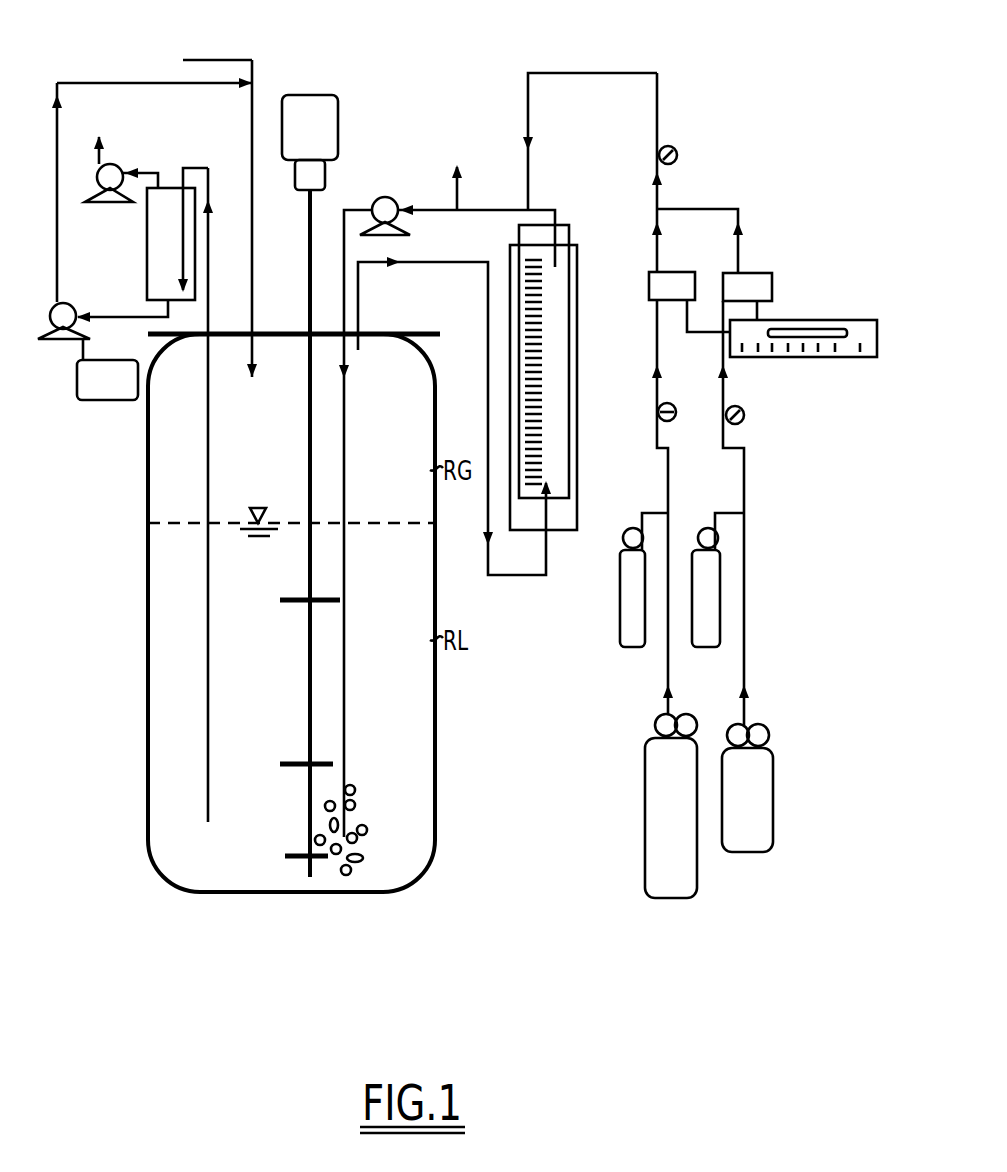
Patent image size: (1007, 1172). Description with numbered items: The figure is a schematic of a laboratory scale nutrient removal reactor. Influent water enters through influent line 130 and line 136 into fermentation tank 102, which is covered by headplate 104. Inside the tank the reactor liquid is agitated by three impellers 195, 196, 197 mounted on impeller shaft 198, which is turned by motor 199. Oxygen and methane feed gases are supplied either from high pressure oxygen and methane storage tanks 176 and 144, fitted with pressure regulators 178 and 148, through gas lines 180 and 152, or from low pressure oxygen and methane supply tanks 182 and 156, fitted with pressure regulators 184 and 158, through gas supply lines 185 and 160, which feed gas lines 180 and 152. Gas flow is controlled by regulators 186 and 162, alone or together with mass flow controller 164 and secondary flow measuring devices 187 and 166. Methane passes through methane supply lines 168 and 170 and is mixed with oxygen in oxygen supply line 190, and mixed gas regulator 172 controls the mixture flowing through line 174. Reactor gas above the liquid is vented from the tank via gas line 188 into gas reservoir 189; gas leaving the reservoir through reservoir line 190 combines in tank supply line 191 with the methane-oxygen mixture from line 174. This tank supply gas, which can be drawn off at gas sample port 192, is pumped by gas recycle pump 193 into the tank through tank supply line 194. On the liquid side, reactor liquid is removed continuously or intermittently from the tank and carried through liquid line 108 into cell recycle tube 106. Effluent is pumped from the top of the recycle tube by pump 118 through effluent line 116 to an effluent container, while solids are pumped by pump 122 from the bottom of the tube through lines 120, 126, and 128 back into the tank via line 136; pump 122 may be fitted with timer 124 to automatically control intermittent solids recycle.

The fermentation tank 102 is at (436, 815).
The headplate 104 is at (372, 334).
The cell recycle tube 106 is at (147, 238).
The liquid line 108 is at (208, 290).
The effluent line 116 is at (148, 176).
The pump 118 is at (108, 142).
The line 120 is at (125, 296).
The pump 122 is at (55, 305).
The timer 124 is at (100, 400).
The line 126 is at (57, 132).
The line 128 is at (112, 83).
The influent line 130 is at (238, 30).
The line 136 is at (252, 112).
The high pressure methane storage tank 144 is at (773, 812).
The pressure regulator 148 is at (770, 735).
The gas line 152 is at (745, 612).
The low pressure methane supply tank 156 is at (705, 647).
The pressure regulator 158 is at (718, 540).
The gas supply line 160 is at (727, 513).
The regulator 162 is at (744, 414).
The mass flow controller 164 is at (836, 298).
The secondary flow measuring device 166 is at (772, 285).
The methane supply line 168 is at (740, 238).
The methane supply line 170 is at (690, 209).
The mixed gas regulator 172 is at (677, 150).
The line 174 is at (598, 73).
The high pressure oxygen storage tank 176 is at (645, 800).
The pressure regulator 178 is at (655, 725).
The gas line 180 is at (668, 658).
The low pressure oxygen supply tank 182 is at (620, 600).
The pressure regulator 184 is at (623, 538).
The gas supply line 185 is at (650, 513).
The regulator 186 is at (662, 400).
The secondary flow measuring device 187 is at (649, 286).
The gas line 188 is at (466, 262).
The gas reservoir 189 is at (577, 330).
The oxygen supply line / reservoir line 190 is at (552, 210).
The tank supply line 191 is at (495, 210).
The gas sample port 192 is at (455, 172).
The gas recycle pump 193 is at (385, 197).
The tank supply line 194 is at (344, 312).
The impeller 195 is at (290, 825).
The impeller 196 is at (290, 735).
The impeller 197 is at (300, 600).
The impeller shaft 198 is at (308, 478).
The motor 199 is at (312, 95).